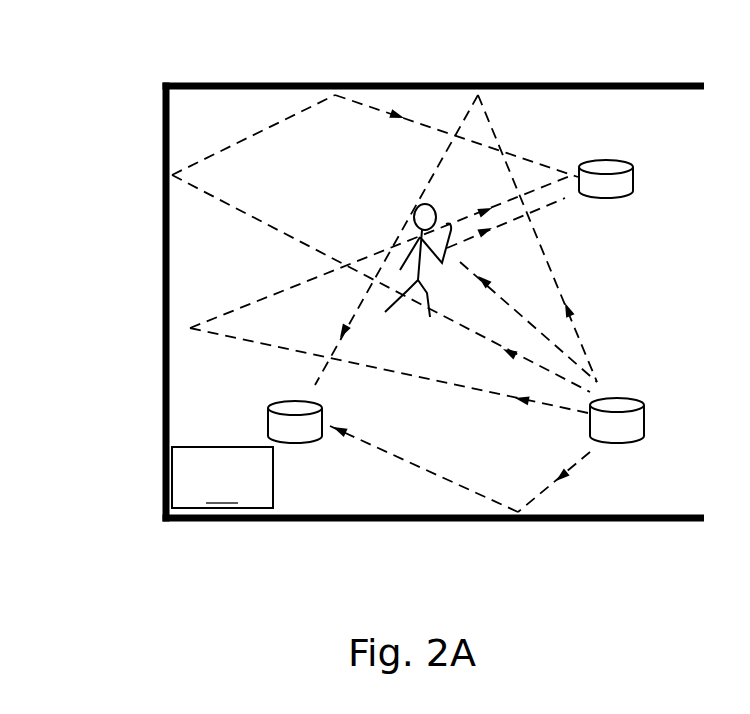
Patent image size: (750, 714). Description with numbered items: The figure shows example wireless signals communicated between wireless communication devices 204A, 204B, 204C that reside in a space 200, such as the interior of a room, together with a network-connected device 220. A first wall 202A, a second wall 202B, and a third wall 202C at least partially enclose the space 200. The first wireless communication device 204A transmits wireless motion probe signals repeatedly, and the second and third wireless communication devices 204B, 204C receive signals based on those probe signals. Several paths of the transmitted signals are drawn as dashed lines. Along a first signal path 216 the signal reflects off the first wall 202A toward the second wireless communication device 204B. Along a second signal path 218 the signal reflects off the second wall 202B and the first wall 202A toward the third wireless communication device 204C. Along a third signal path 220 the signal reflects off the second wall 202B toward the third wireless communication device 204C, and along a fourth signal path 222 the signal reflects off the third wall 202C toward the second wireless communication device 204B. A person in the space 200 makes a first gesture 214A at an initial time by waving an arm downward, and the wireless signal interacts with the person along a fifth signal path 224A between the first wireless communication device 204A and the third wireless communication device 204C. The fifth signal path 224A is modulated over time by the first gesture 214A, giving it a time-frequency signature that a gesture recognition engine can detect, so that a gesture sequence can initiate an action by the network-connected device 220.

The space 200 is at (394, 298).
The first wall 202A is at (418, 85).
The second wall 202B is at (163, 137).
The third wall 202C is at (645, 523).
The first wireless communication device 204A is at (616, 398).
The second wireless communication device 204B is at (322, 418).
The third wireless communication device 204C is at (633, 170).
The first gesture 214A is at (414, 212).
The first signal path 216 is at (573, 318).
The second signal path 218 is at (518, 362).
The network-connected device 220 is at (530, 410).
The fourth signal path 222 is at (563, 470).
The fifth signal path 224A is at (493, 290).